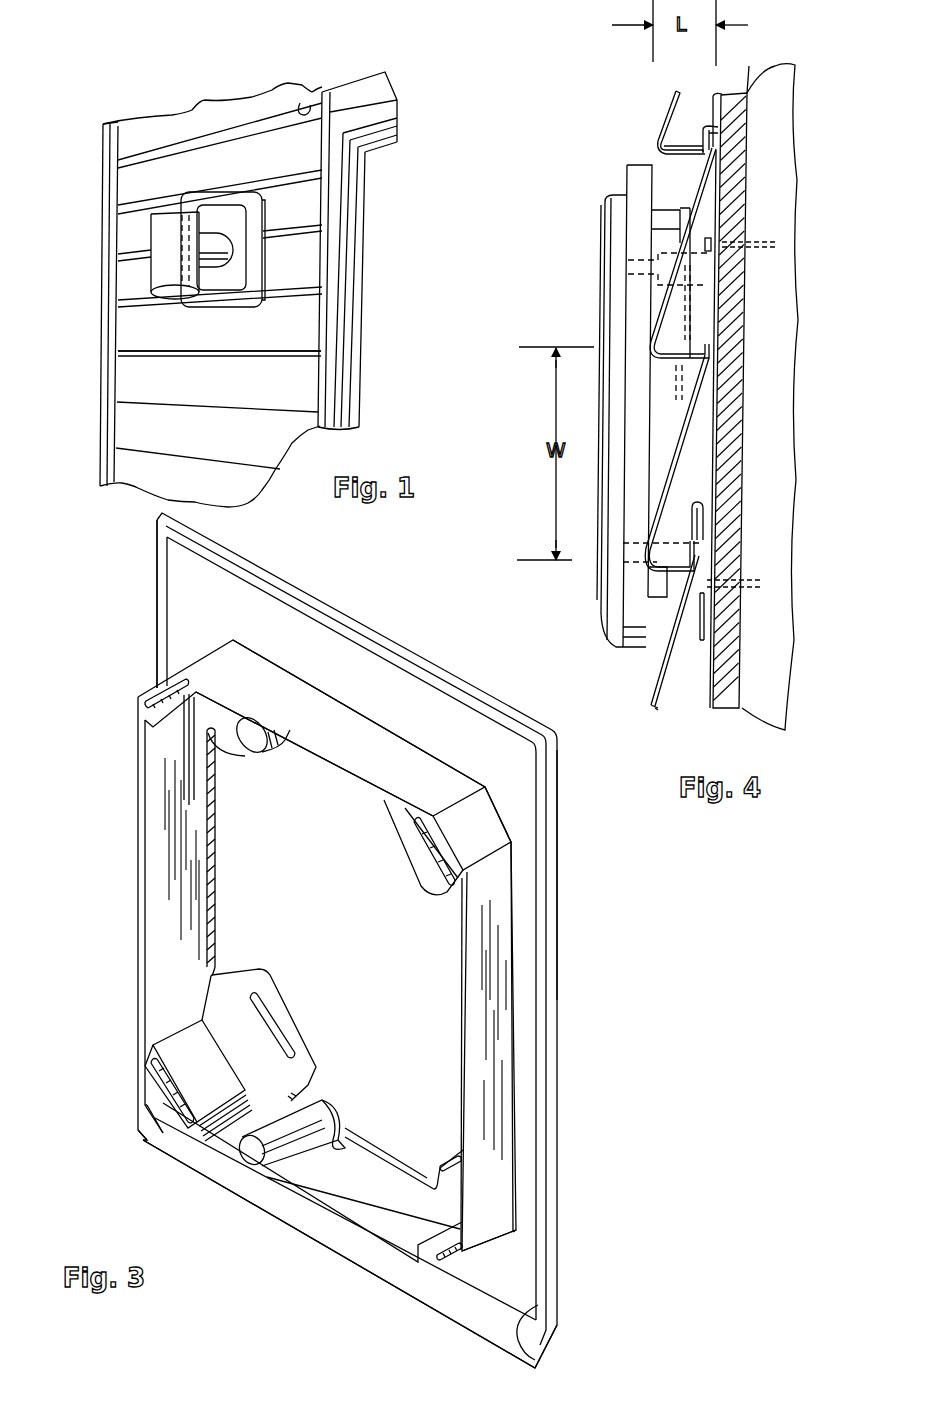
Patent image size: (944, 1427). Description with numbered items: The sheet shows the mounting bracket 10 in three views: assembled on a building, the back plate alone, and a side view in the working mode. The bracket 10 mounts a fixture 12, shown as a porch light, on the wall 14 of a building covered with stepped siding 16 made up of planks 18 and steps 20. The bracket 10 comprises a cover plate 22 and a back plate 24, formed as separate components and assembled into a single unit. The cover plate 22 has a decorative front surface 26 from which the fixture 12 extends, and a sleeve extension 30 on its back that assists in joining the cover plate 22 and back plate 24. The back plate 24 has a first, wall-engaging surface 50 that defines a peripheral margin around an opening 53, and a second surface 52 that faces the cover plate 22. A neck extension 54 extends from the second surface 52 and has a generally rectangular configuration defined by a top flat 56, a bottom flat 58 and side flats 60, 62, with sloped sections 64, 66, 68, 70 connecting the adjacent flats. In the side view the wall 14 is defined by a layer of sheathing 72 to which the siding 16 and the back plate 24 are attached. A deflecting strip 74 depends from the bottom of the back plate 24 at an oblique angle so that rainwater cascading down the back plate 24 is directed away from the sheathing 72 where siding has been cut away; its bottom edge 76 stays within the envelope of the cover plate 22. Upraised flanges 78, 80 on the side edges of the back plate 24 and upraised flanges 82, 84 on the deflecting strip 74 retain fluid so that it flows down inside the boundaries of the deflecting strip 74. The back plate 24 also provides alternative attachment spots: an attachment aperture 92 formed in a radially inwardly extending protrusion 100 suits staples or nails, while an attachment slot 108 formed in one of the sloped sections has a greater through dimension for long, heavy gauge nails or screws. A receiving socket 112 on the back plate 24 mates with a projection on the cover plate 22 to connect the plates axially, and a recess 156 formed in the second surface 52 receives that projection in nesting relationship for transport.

In FIG. 1, the bracket 10 is at (280, 218).
In FIG. 1, the fixture 12 is at (166, 254).
In FIG. 1, the wall 14 is at (209, 96).
In FIG. 4, the wall 14 is at (765, 136).
In FIG. 1, the siding 16 is at (292, 369).
In FIG. 1, the planks 18 is at (152, 367).
In FIG. 4, the planks 18 is at (690, 421).
In FIG. 1, the steps 20 is at (313, 104).
In FIG. 4, the steps 20 is at (700, 372).
In FIG. 4, the cover plate 22 is at (637, 233).
In FIG. 4, the back plate 24 is at (710, 475).
In FIG. 3, the back plate 24 is at (400, 633).
In FIG. 1, the decorative front surface 26 is at (231, 269).
In FIG. 4, the decorative front surface 26 is at (600, 585).
In FIG. 4, the sleeve extension 30 is at (665, 233).
In FIG. 4, the first, wall-engaging surface 50 is at (720, 194).
In FIG. 3, the second surface 52 is at (453, 724).
In FIG. 3, the opening 53 is at (398, 1022).
In FIG. 4, the neck extension 54 is at (683, 527).
In FIG. 3, the neck extension 54 is at (524, 981).
In FIG. 3, the top flat 56 is at (346, 752).
In FIG. 3, the bottom flat 58 is at (366, 1211).
In FIG. 3, the side flat 60 is at (160, 816).
In FIG. 3, the side flat 62 is at (489, 913).
In FIG. 3, the sloped section 64 is at (203, 653).
In FIG. 3, the sloped section 66 is at (461, 840).
In FIG. 3, the sloped section 68 is at (489, 1250).
In FIG. 3, the sloped section 70 is at (157, 1100).
In FIG. 4, the sheathing 72 is at (723, 273).
In FIG. 4, the deflecting strip 74 is at (703, 616).
In FIG. 3, the deflecting strip 74 is at (460, 1303).
In FIG. 4, the bottom edge 76 is at (678, 647).
In FIG. 3, the bottom edge 76 is at (307, 1233).
In FIG. 3, the upraised flange 78 is at (160, 607).
In FIG. 3, the upraised flange 80 is at (530, 845).
In FIG. 3, the upraised flange 82 is at (143, 1133).
In FIG. 3, the upraised flange 84 is at (525, 1312).
In FIG. 3, the attachment aperture 92 is at (272, 1024).
In FIG. 3, the radially inwardly extending protrusion 100 is at (237, 1000).
In FIG. 3, the attachment slot 108 is at (170, 1087).
In FIG. 3, the receiving socket 112 is at (243, 1145).
In FIG. 3, the recess 156 is at (336, 1152).